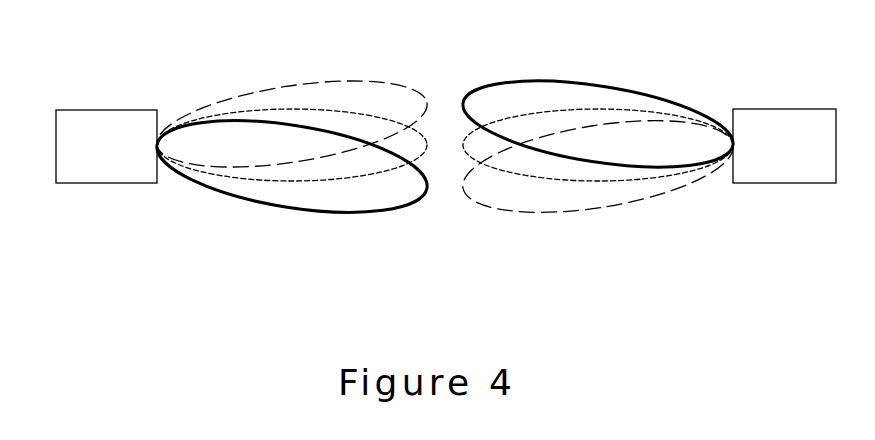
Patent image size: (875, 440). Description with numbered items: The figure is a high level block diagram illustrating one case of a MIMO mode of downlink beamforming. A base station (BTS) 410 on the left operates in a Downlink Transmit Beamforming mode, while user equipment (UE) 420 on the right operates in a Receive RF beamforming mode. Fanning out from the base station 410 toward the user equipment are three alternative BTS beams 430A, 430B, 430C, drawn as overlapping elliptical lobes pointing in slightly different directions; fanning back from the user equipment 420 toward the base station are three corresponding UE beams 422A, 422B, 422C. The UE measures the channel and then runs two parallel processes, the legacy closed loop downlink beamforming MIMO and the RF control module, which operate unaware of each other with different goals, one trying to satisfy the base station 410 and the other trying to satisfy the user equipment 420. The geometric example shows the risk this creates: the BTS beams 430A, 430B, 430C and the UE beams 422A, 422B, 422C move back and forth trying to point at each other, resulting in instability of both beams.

The base station (BTS) 410 is at (115, 110).
The user equipment (UE) 420 is at (812, 110).
The BTS beam 430A is at (237, 98).
The BTS beam 430B is at (337, 110).
The BTS beam 430C is at (302, 213).
The UE beam 422A is at (503, 80).
The UE beam 422B is at (632, 110).
The UE beam 422C is at (562, 215).